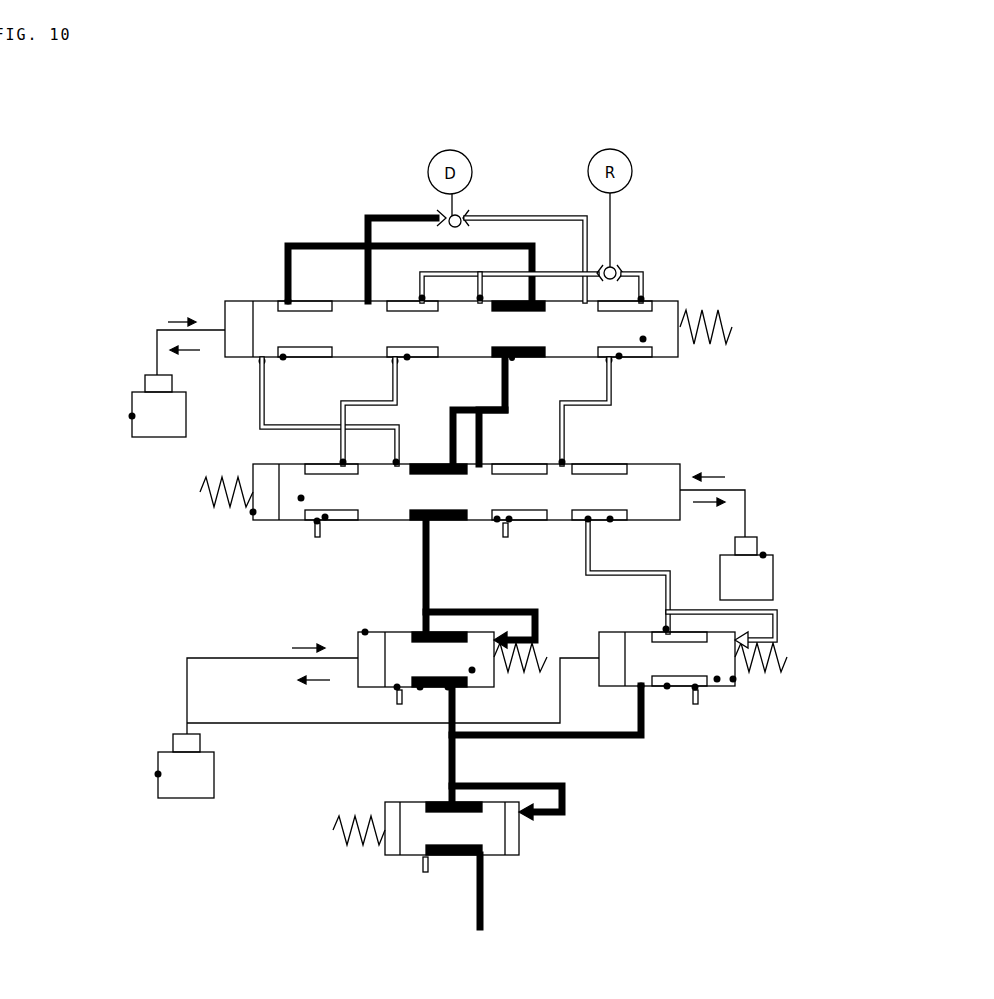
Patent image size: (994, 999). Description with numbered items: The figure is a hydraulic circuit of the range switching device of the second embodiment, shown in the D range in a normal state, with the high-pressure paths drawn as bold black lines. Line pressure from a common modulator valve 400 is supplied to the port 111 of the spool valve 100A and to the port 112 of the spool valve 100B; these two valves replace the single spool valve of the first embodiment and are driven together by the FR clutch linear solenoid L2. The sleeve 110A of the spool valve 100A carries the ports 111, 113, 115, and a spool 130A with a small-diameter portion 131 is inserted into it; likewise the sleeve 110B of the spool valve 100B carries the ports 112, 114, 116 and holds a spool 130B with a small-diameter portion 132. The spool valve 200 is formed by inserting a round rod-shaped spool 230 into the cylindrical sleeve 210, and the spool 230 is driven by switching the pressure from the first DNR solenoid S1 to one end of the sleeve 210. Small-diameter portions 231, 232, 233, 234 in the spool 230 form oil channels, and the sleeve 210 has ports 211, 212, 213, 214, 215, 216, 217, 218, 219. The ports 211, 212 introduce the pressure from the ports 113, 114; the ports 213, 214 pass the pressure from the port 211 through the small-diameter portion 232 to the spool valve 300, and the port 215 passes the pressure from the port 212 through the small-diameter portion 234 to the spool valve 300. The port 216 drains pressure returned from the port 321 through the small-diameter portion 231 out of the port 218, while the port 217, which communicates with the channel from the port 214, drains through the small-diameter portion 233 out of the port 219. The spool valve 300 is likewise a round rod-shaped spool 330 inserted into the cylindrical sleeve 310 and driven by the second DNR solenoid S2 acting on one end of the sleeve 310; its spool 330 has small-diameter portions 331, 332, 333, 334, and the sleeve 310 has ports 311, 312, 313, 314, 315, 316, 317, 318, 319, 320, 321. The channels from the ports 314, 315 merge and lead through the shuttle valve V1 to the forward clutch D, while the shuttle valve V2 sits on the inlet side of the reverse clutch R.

The spool valve 300 is at (704, 289).
The cylindrical sleeve 310 is at (688, 344).
The port 311 is at (262, 362).
The port 312 is at (502, 361).
The port 313 is at (608, 361).
The port 314 is at (288, 300).
The port 315 is at (534, 262).
The port 316 is at (480, 295).
The port 317 is at (583, 292).
The port 318 is at (643, 298).
The port 319 is at (367, 297).
The port 320 is at (422, 296).
The port 321 is at (394, 362).
The spool 330 is at (643, 339).
The small-diameter portion 331 is at (284, 358).
The small-diameter portion 332 is at (408, 358).
The small-diameter portion 333 is at (512, 359).
The small-diameter portion 334 is at (620, 357).
The spool valve 200 is at (190, 486).
The cylindrical sleeve 210 is at (252, 513).
The port 211 is at (429, 525).
The port 212 is at (589, 521).
The port 213 is at (395, 461).
The port 214 is at (450, 461).
The port 215 is at (563, 462).
The port 216 is at (342, 461).
The port 217 is at (479, 461).
The port 218 is at (316, 523).
The port 219 is at (510, 521).
The spool 230 is at (300, 499).
The small-diameter portion 231 is at (325, 519).
The small-diameter portion 232 is at (420, 521).
The small-diameter portion 233 is at (497, 521).
The small-diameter portion 234 is at (611, 521).
The spool valve 100A is at (504, 696).
The spool valve 100B is at (772, 678).
The sleeve 110A is at (364, 631).
The sleeve 110B is at (734, 681).
The port 111 is at (449, 691).
The port 112 is at (642, 691).
The port 113 is at (423, 627).
The port 114 is at (665, 628).
The port 115 is at (396, 691).
The port 116 is at (696, 691).
The spool 130A is at (472, 672).
The spool 130B is at (718, 681).
The small-diameter portion 131 is at (420, 690).
The small-diameter portion 132 is at (668, 690).
The modulator valve 400 is at (535, 853).
The shuttle valve V1 is at (438, 216).
The shuttle valve V2 is at (619, 269).
The first DNR solenoid S1 is at (764, 554).
The second DNR solenoid S2 is at (132, 416).
The FR clutch linear solenoid L2 is at (158, 774).